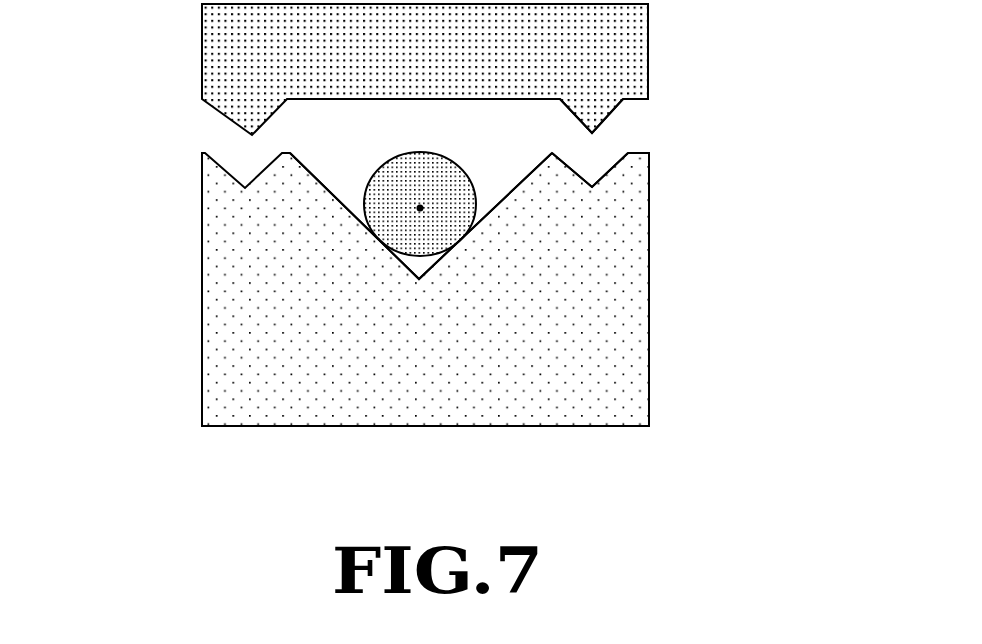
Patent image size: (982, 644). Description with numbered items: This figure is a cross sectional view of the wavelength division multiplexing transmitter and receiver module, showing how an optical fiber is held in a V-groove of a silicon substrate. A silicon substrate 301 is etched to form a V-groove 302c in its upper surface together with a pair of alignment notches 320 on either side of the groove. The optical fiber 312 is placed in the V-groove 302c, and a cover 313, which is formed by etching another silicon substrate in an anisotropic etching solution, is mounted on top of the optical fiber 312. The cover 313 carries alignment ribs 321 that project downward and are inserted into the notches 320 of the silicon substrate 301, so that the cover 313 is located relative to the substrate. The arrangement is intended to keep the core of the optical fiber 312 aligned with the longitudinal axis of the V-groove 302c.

The cover 313 is at (278, 61).
The alignment ribs 321 is at (598, 117).
The alignment notches 320 is at (590, 167).
The optical fiber 312 is at (433, 189).
The V-groove 302c is at (355, 197).
The silicon substrate 301 is at (315, 346).